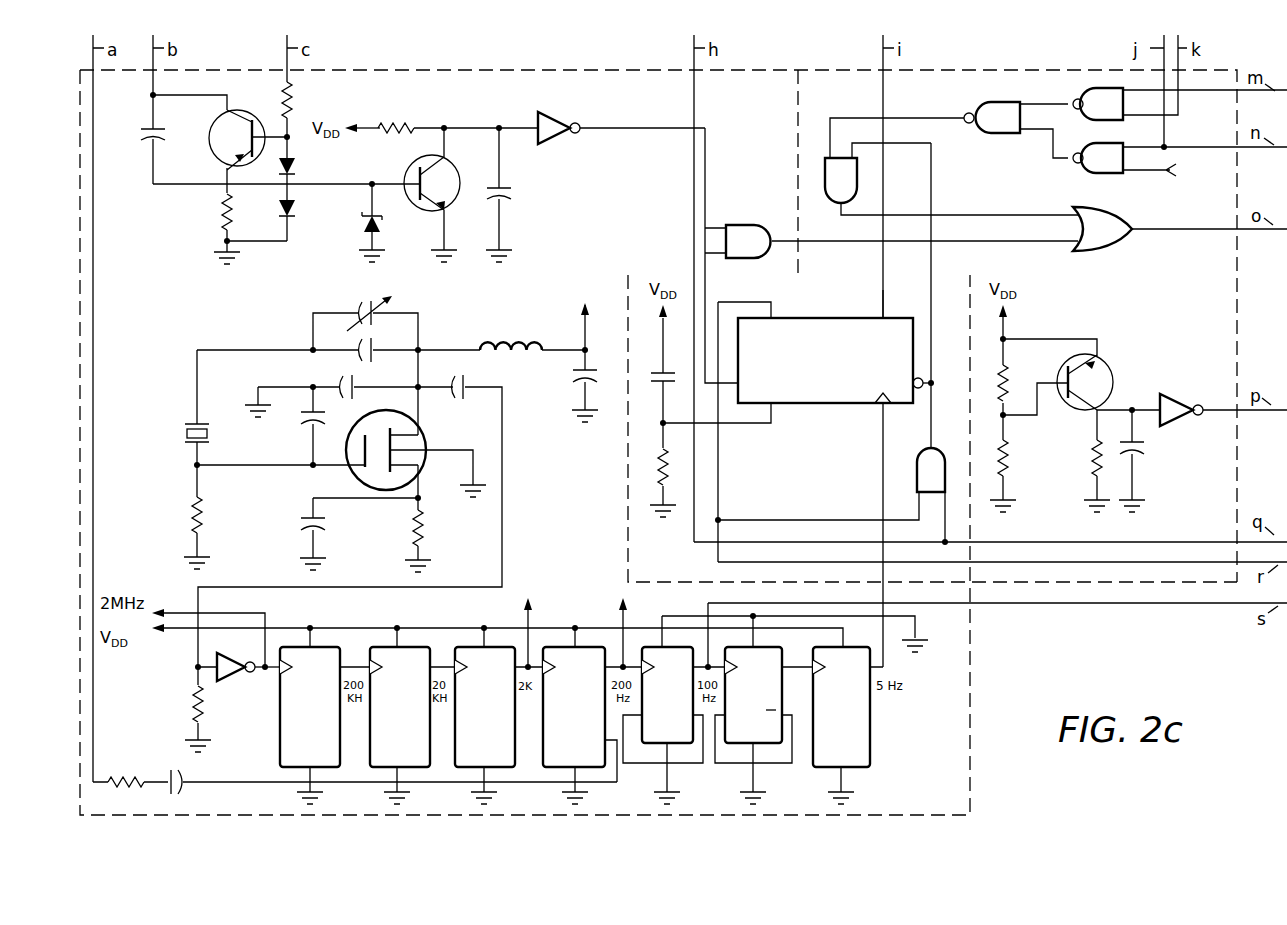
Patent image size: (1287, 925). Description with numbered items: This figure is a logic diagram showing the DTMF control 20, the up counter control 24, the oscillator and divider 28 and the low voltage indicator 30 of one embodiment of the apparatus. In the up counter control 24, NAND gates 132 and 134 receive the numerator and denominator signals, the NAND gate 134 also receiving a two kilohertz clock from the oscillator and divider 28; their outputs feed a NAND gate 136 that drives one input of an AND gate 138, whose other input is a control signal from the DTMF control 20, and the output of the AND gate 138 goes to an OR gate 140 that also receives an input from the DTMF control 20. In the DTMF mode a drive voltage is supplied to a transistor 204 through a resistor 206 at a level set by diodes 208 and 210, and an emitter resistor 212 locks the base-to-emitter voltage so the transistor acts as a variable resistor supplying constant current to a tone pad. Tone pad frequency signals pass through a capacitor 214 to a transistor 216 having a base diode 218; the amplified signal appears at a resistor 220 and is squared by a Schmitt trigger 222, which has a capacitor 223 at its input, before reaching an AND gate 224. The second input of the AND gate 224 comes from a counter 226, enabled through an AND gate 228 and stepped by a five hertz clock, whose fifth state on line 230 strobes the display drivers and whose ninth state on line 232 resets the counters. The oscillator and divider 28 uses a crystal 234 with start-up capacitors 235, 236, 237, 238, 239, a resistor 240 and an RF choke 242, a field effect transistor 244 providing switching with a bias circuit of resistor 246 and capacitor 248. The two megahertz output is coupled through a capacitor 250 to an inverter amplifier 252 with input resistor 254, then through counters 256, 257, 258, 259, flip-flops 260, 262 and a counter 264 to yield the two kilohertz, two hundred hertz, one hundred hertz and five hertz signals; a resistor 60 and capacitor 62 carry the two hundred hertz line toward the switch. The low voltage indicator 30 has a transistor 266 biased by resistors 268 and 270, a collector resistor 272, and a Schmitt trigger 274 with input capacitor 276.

The DTMF control 20 is at (758, 113).
The up counter control 24 is at (844, 99).
The oscillator and divider 28 is at (147, 309).
The low voltage indicator 30 is at (1199, 309).
The resistor 60 is at (117, 776).
The capacitor 62 is at (186, 790).
The NAND gate 132 is at (1093, 95).
The NAND gate 134 is at (1092, 168).
The NAND gate 136 is at (994, 113).
The AND gate 138 is at (835, 176).
The OR gate 140 is at (1111, 222).
The transistor 204 is at (215, 151).
The resistor 206 is at (297, 100).
The diode 208 is at (297, 163).
The diode 210 is at (297, 208).
The resistor 212 is at (223, 218).
The capacitor 214 is at (142, 132).
The transistor 216 is at (415, 195).
The diode 218 is at (365, 230).
The resistor 220 is at (397, 126).
The Schmitt trigger 222 is at (555, 121).
The capacitor 223 is at (508, 192).
The AND gate 224 is at (741, 224).
The counter 226 is at (839, 364).
The AND gate 228 is at (920, 461).
The line 230 is at (739, 302).
The line 232 is at (883, 293).
The crystal 234 is at (182, 433).
The capacitor 235 is at (396, 300).
The capacitor 236 is at (360, 353).
The capacitor 237 is at (356, 385).
The capacitor 238 is at (310, 427).
The capacitor 239 is at (575, 375).
The resistor 240 is at (190, 515).
The RF choke 242 is at (490, 340).
The field effect transistor 244 is at (359, 472).
The resistor 246 is at (410, 530).
The capacitor 248 is at (305, 528).
The capacitor 250 is at (467, 384).
The inverter amplifier 252 is at (252, 684).
The resistor 254 is at (190, 687).
The counter 256 is at (328, 725).
The counter 257 is at (418, 725).
The counter 258 is at (503, 725).
The counter 259 is at (590, 725).
The flip-flop 260 is at (685, 703).
The flip-flop 262 is at (769, 703).
The counter 264 is at (859, 717).
The transistor 266 is at (1098, 368).
The resistor 268 is at (1012, 380).
The resistor 270 is at (1013, 452).
The resistor 272 is at (1090, 464).
The Schmitt trigger 274 is at (1172, 392).
The capacitor 276 is at (1144, 456).